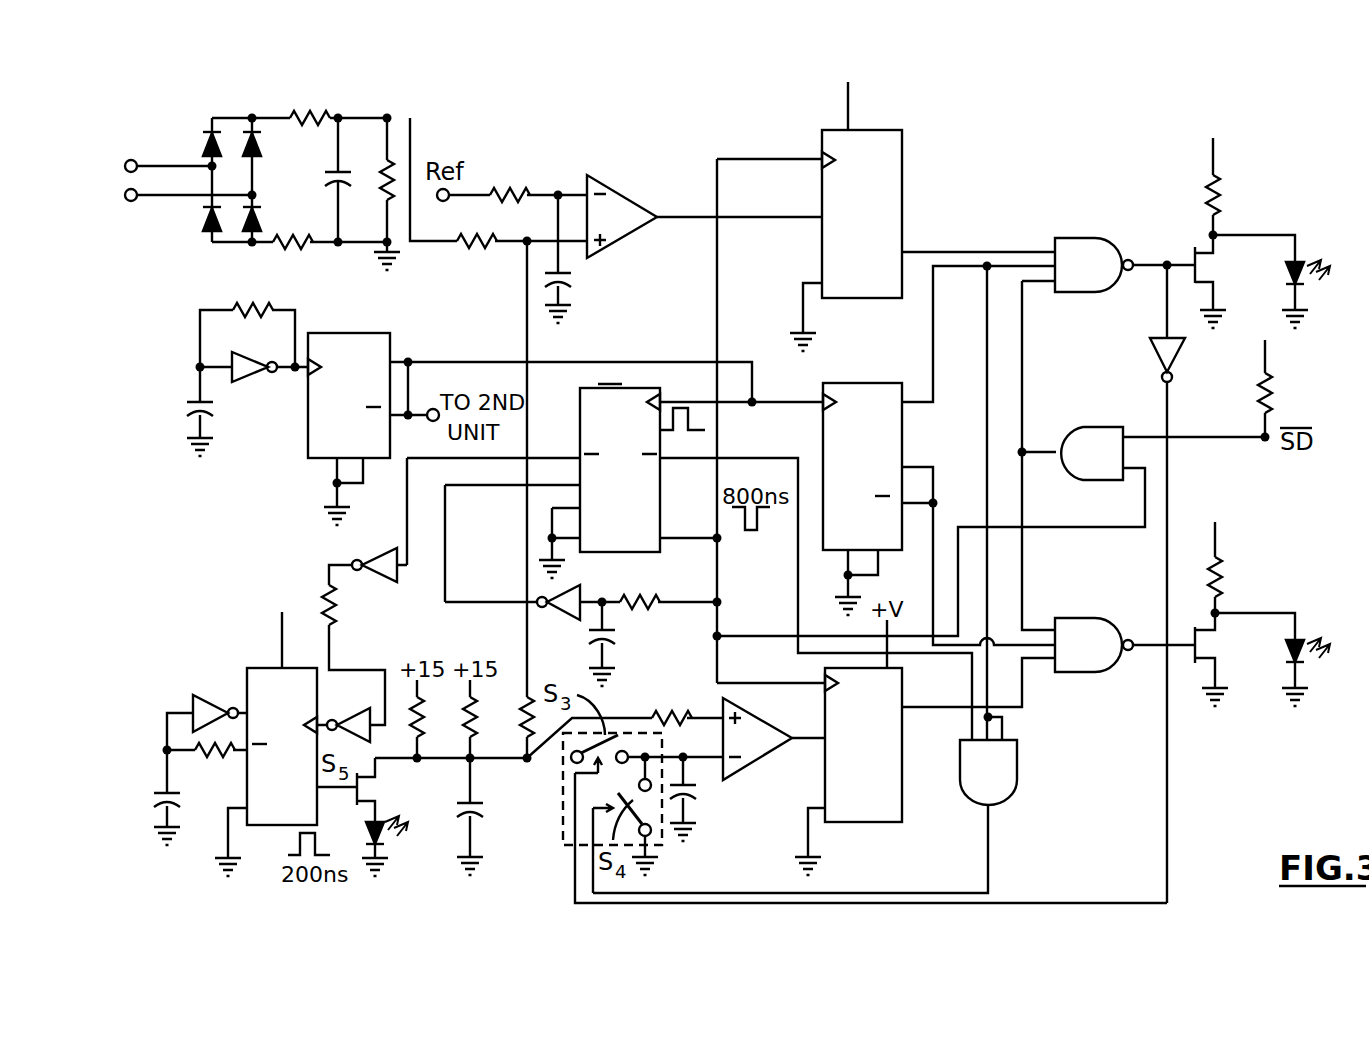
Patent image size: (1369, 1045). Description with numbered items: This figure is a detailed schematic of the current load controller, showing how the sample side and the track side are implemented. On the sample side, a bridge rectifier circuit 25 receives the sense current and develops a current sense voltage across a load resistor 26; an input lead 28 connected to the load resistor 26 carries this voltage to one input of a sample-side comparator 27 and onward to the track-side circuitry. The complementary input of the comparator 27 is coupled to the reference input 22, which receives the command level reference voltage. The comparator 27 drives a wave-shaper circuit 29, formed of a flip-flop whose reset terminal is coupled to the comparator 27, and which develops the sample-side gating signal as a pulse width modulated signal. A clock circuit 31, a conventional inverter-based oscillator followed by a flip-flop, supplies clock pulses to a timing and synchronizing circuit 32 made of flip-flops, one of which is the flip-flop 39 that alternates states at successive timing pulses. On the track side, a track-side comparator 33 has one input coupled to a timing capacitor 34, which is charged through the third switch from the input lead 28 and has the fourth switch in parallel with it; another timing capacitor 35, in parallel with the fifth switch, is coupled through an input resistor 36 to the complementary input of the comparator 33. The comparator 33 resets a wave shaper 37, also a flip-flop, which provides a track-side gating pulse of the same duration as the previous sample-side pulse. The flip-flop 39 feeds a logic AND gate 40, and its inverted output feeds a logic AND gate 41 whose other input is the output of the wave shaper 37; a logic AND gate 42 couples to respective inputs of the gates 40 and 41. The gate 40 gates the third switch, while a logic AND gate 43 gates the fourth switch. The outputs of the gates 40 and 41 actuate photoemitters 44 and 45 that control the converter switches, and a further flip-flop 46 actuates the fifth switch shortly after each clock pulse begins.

The reference input 22 is at (470, 194).
The bridge rectifier circuit 25 is at (233, 118).
The load resistor 26 is at (388, 170).
The sample-side comparator 27 is at (622, 195).
The input lead 28 is at (527, 535).
The wave-shaper circuit 29 is at (893, 163).
The clock circuit 31 is at (272, 437).
The timing and synchronizing circuit 32 is at (642, 456).
The track-side comparator 33 is at (760, 765).
The timing capacitor 34 is at (697, 797).
The timing capacitor 35 is at (483, 812).
The input resistor 36 is at (678, 710).
The wave shaper 37 is at (897, 790).
The flip-flop 39 is at (833, 448).
The logic AND gate 40 is at (1075, 238).
The logic AND gate 41 is at (1075, 618).
The logic AND gate 42 is at (1112, 427).
The logic AND gate 43 is at (1045, 745).
The photoemitter 44 is at (1302, 257).
The photoemitter 45 is at (1303, 637).
The flip-flop 46 is at (255, 685).